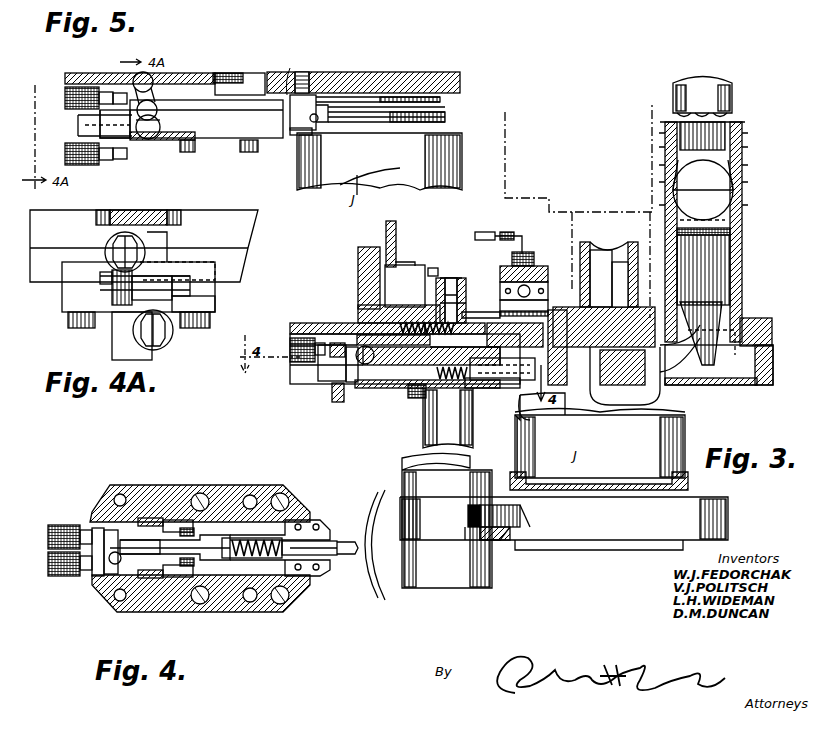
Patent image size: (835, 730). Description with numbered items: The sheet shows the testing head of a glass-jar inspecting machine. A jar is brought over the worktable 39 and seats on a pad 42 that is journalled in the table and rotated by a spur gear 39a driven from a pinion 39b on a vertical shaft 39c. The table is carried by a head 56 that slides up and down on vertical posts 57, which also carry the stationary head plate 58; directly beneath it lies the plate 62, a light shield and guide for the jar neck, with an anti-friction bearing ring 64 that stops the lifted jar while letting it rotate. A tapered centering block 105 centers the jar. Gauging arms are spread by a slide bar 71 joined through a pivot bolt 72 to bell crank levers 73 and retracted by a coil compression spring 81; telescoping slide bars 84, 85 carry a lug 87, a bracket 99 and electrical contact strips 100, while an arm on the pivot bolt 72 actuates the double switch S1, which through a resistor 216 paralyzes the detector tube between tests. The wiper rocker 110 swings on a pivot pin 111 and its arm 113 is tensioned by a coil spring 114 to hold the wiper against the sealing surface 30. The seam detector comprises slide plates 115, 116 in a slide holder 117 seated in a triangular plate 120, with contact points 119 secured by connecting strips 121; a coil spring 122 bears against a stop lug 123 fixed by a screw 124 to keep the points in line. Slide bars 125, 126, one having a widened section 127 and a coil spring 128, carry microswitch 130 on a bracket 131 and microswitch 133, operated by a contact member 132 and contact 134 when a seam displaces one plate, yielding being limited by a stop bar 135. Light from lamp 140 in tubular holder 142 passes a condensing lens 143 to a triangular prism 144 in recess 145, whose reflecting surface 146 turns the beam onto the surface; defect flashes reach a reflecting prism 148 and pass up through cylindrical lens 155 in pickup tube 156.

In FIG. 5, the sealing surface 30 is at (447, 113).
In FIG. 4, the sealing surface 30 is at (372, 598).
In FIG. 3, the sealing surface 30 is at (690, 360).
In FIG. 3, the worktable 39 is at (718, 507).
In FIG. 3, the spur gear 39a is at (525, 514).
In FIG. 3, the pinion 39b is at (468, 514).
In FIG. 3, the vertical shaft 39c is at (462, 533).
In FIG. 3, the pad 42 is at (510, 480).
In FIG. 3, the head 56 is at (482, 574).
In FIG. 3, the vertical posts 57 is at (430, 422).
In FIG. 5, the head plate 58 is at (432, 75).
In FIG. 4A, the head plate 58 is at (248, 224).
In FIG. 3, the head plate 58 is at (752, 320).
In FIG. 3, the plate 62 is at (770, 372).
In FIG. 5, the anti-friction bearing ring 64 is at (445, 100).
In FIG. 3, the anti-friction bearing ring 64 is at (680, 335).
In FIG. 5, the slide bar 71 is at (196, 75).
In FIG. 4A, the slide bar 71 is at (152, 210).
In FIG. 3, the slide bar 71 is at (338, 322).
In FIG. 3, the pivot bolt 72 is at (462, 295).
In FIG. 3, the bell crank levers 73 is at (492, 312).
In FIG. 3, the coil compression spring 81 is at (400, 326).
In FIG. 3, the slide bar 84 is at (538, 275).
In FIG. 3, the slide bar 85 is at (548, 290).
In FIG. 3, the lug 87 is at (548, 308).
In FIG. 3, the bracket 99 is at (528, 258).
In FIG. 3, the electrical contact strips 100 is at (522, 236).
In FIG. 3, the tapered centering block 105 is at (600, 395).
In FIG. 5, the rocker 110 is at (313, 115).
In FIG. 5, the pivot pin 111 is at (296, 134).
In FIG. 5, the arm 113 is at (285, 72).
In FIG. 5, the coil spring 114 is at (228, 74).
In FIG. 4A, the slide plate 115 is at (130, 292).
In FIG. 4, the slide plate 115 is at (300, 520).
In FIG. 3, the slide plate 115 is at (505, 388).
In FIG. 5, the slide plate 116 is at (200, 140).
In FIG. 4A, the slide plate 116 is at (190, 290).
In FIG. 4, the slide plate 116 is at (288, 588).
In FIG. 5, the slide holder 117 is at (235, 125).
In FIG. 4A, the slide holder 117 is at (215, 293).
In FIG. 4, the slide holder 117 is at (258, 490).
In FIG. 3, the slide holder 117 is at (418, 352).
In FIG. 4, the contact points 119 is at (358, 548).
In FIG. 4A, the triangular plate 120 is at (242, 256).
In FIG. 4, the connecting strips 121 is at (340, 540).
In FIG. 3, the connecting strips 121 is at (510, 362).
In FIG. 4, the coil spring 122 is at (268, 540).
In FIG. 3, the coil spring 122 is at (490, 340).
In FIG. 4, the stop lug 123 is at (232, 538).
In FIG. 3, the stop lug 123 is at (437, 372).
In FIG. 3, the screw 124 is at (406, 392).
In FIG. 4A, the slide bar 125 is at (112, 283).
In FIG. 4, the slide bar 125 is at (185, 520).
In FIG. 3, the slide bar 125 is at (325, 382).
In FIG. 5, the slide bar 126 is at (80, 126).
In FIG. 4A, the slide bar 126 is at (193, 303).
In FIG. 4, the slide bar 126 is at (178, 575).
In FIG. 4, the widened section 127 is at (145, 538).
In FIG. 4, the coil spring 128 is at (190, 528).
In FIG. 5, the microswitch 130 is at (85, 86).
In FIG. 4A, the microswitch 130 is at (104, 243).
In FIG. 4, the microswitch 130 is at (72, 524).
In FIG. 3, the microswitch 130 is at (302, 355).
In FIG. 5, the bracket 131 is at (108, 92).
In FIG. 4A, the bracket 131 is at (100, 276).
In FIG. 4, the bracket 131 is at (104, 550).
In FIG. 3, the bracket 131 is at (325, 326).
In FIG. 5, the contact member 132 is at (150, 90).
In FIG. 4A, the contact member 132 is at (160, 250).
In FIG. 4, the contact member 132 is at (98, 528).
In FIG. 3, the contact member 132 is at (352, 383).
In FIG. 5, the microswitch 133 is at (90, 166).
In FIG. 4A, the microswitch 133 is at (178, 336).
In FIG. 4, the microswitch 133 is at (58, 578).
In FIG. 5, the contact 134 is at (112, 160).
In FIG. 4A, the contact 134 is at (122, 322).
In FIG. 5, the stop bar 135 is at (168, 140).
In FIG. 4A, the stop bar 135 is at (178, 212).
In FIG. 4, the stop bar 135 is at (148, 518).
In FIG. 3, the electric lamp 140 is at (705, 168).
In FIG. 3, the tubular holder 142 is at (742, 182).
In FIG. 3, the condensing lens 143 is at (720, 232).
In FIG. 3, the triangular prism 144 is at (708, 360).
In FIG. 3, the recess 145 is at (745, 354).
In FIG. 3, the reflecting surface 146 is at (710, 350).
In FIG. 3, the reflecting prism 148 is at (625, 382).
In FIG. 3, the cylindrical lens 155 is at (613, 262).
In FIG. 3, the pickup tube 156 is at (600, 252).
In FIG. 3, the resistor 216 is at (438, 270).
In FIG. 3, the double switch S1 is at (410, 272).